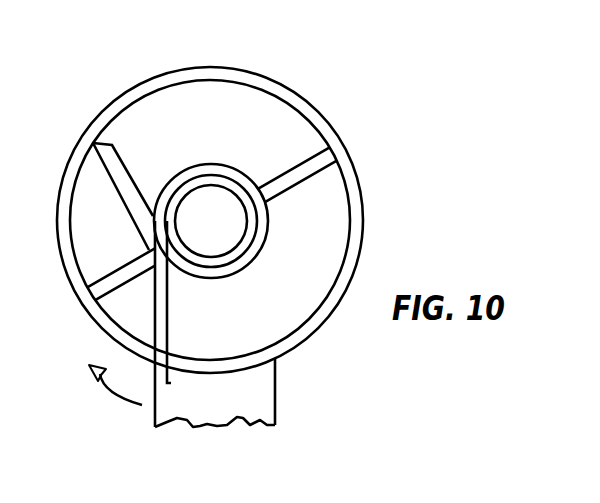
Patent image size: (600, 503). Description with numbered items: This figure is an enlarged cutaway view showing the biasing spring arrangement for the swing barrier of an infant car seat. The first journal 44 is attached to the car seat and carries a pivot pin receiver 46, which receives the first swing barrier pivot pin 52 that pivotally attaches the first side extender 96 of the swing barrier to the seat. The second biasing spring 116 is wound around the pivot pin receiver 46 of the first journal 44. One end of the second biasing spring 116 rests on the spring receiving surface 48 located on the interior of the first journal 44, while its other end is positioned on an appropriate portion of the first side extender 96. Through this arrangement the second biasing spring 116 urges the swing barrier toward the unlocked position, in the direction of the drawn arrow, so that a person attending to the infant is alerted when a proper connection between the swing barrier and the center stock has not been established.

The first journal 44 is at (357, 181).
The pivot pin receiver 46 is at (241, 249).
The spring receiving surface 48 is at (129, 210).
The first swing barrier pivot pin 52 is at (238, 219).
The first side extender 96 is at (275, 395).
The second biasing spring 116 is at (230, 171).